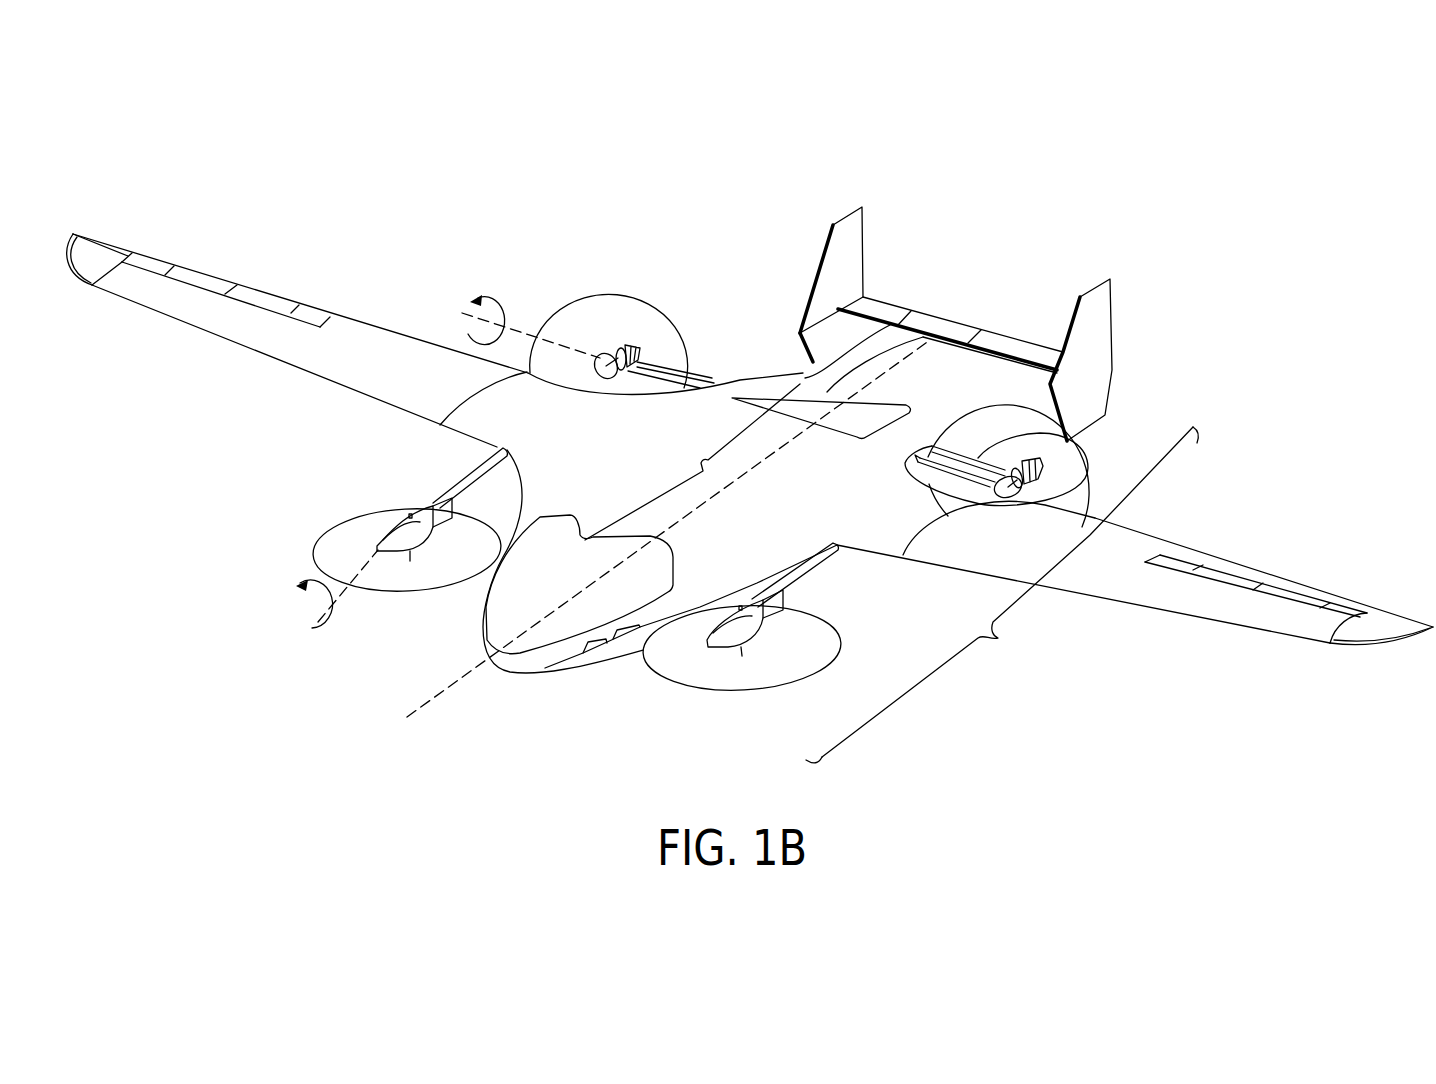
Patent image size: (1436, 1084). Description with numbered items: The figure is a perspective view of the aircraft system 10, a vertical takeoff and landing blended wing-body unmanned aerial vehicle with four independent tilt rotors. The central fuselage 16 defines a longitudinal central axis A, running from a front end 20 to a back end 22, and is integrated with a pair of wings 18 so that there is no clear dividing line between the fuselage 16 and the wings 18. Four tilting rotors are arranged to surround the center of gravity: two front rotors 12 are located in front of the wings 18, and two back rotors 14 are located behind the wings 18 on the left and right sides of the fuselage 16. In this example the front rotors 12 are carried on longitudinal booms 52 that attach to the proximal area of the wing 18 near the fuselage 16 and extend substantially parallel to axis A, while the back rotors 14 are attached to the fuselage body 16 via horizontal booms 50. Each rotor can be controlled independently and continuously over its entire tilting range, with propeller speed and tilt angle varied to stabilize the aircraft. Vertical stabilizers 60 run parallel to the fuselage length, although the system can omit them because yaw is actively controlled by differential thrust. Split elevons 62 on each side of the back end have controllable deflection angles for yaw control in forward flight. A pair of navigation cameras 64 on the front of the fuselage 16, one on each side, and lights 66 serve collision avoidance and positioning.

The aircraft system 10 is at (1073, 759).
The front tilt rotors 12 is at (411, 560).
The back tilt rotors 14 is at (608, 364).
The central fuselage 16 is at (863, 568).
The wings 18 is at (232, 313).
The front end of the fuselage 20 is at (583, 535).
The back end of the fuselage 22 is at (797, 368).
The horizontal booms 50 is at (660, 366).
The longitudinal booms 52 is at (462, 473).
The vertical stabilizer 60 is at (847, 231).
The split elevons 62 is at (948, 328).
The navigation cameras 64 is at (633, 638).
The lights 66 is at (587, 653).